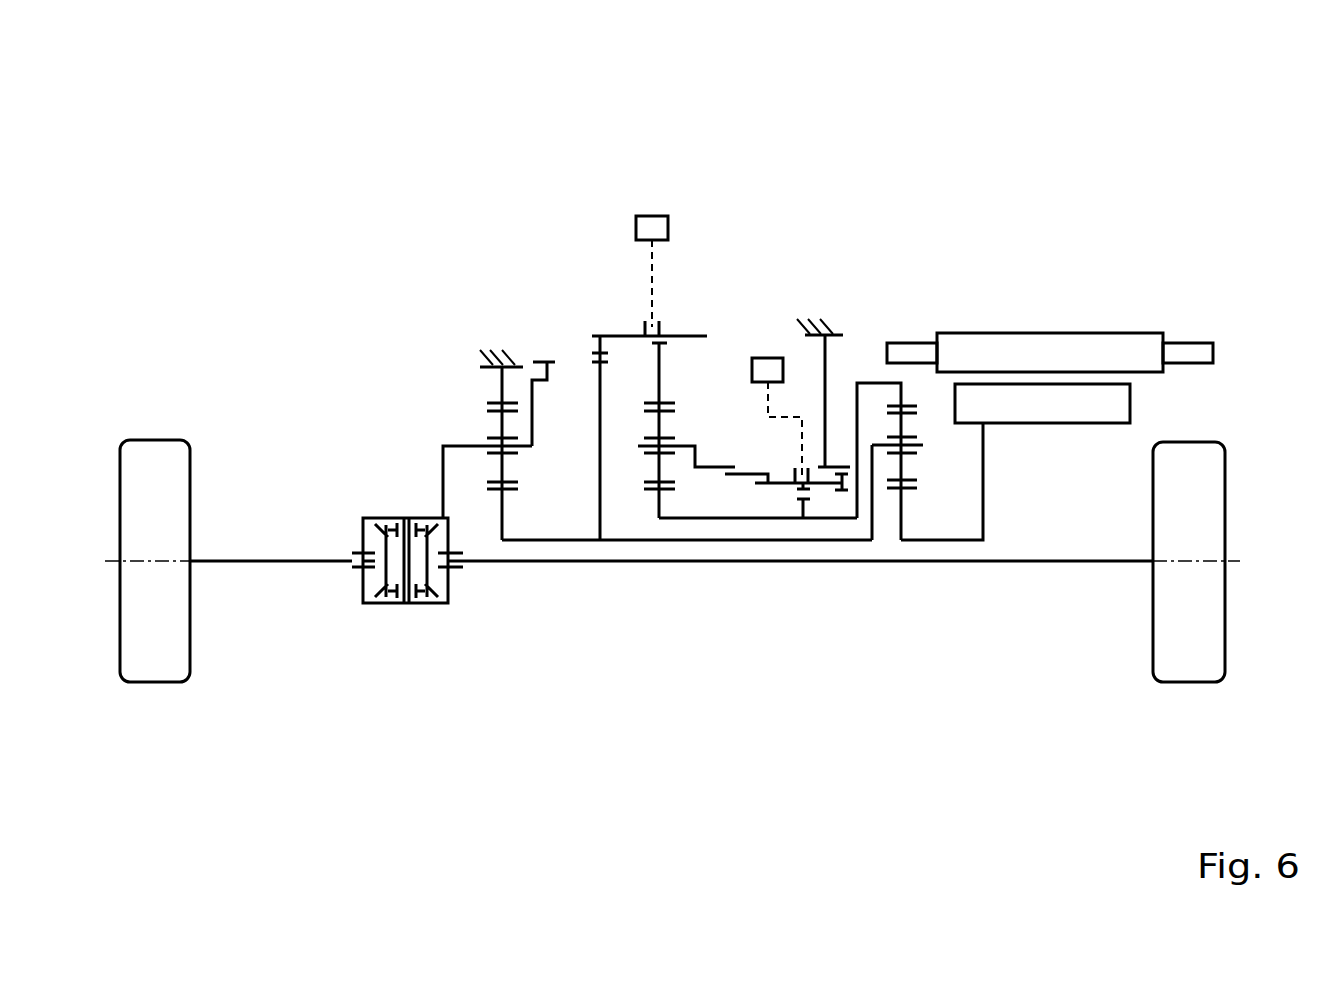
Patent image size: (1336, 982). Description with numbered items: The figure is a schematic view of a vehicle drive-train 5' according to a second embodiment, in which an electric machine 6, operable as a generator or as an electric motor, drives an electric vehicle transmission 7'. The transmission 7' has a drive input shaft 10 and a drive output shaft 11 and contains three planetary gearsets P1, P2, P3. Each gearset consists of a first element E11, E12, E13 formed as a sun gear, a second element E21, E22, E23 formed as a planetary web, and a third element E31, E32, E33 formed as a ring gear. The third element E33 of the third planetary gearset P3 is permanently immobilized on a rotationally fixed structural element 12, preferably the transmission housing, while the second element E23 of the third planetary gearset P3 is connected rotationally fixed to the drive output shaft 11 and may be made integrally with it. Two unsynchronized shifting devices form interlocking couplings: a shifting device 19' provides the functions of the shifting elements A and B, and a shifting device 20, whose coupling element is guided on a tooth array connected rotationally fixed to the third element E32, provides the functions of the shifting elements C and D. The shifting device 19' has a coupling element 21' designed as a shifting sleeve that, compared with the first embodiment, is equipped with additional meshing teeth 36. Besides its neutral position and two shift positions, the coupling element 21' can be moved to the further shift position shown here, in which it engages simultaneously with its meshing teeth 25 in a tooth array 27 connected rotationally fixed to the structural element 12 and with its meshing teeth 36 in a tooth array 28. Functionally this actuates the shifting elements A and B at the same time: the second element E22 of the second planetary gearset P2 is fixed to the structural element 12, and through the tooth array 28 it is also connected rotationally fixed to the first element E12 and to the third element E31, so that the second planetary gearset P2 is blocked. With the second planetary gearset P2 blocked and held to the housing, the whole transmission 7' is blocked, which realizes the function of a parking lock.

The vehicle drive-train 5' is at (197, 99).
The electric vehicle transmission 7' is at (733, 88).
The electric machine 6 is at (1035, 303).
The drive input shaft 10 is at (968, 540).
The drive output shaft 11 is at (443, 463).
The rotationally fixed structural element 12 is at (492, 350).
The shifting device 20 is at (560, 287).
The coupling element 21' is at (718, 296).
The meshing teeth 25 is at (848, 480).
The tooth array 27 is at (823, 465).
The tooth array 28 is at (803, 507).
The meshing teeth 36 is at (798, 490).
The shifting device 19' is at (755, 629).
The shifting element A is at (845, 457).
The shifting element B is at (818, 508).
The shifting element C is at (587, 342).
The shifting element D is at (548, 352).
The first planetary gearset P1 is at (902, 573).
The second planetary gearset P2 is at (660, 573).
The third planetary gearset P3 is at (502, 573).
The first element E11 is at (903, 502).
The first element E12 is at (647, 447).
The first element E13 is at (502, 528).
The second element E21 is at (917, 452).
The second element E22 is at (653, 505).
The second element E23 is at (482, 445).
The third element E31 is at (903, 397).
The third element E32 is at (652, 380).
The third element E33 is at (497, 385).